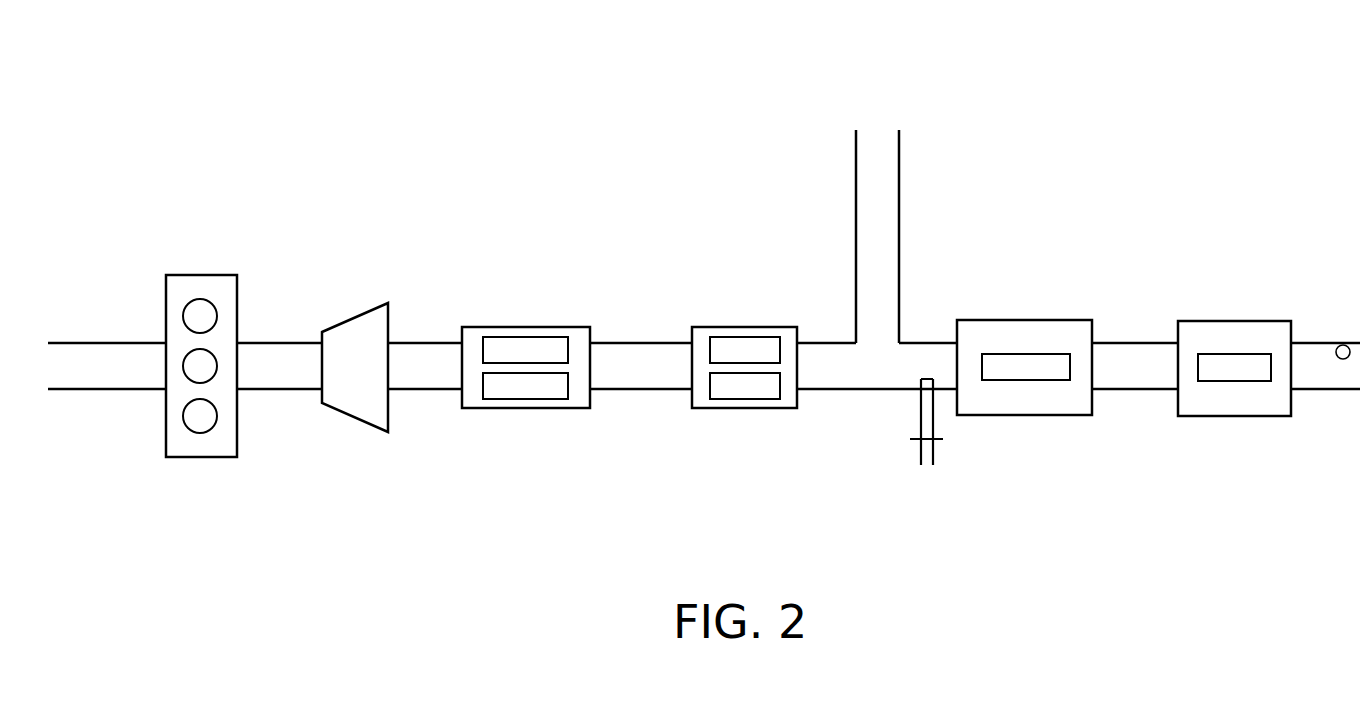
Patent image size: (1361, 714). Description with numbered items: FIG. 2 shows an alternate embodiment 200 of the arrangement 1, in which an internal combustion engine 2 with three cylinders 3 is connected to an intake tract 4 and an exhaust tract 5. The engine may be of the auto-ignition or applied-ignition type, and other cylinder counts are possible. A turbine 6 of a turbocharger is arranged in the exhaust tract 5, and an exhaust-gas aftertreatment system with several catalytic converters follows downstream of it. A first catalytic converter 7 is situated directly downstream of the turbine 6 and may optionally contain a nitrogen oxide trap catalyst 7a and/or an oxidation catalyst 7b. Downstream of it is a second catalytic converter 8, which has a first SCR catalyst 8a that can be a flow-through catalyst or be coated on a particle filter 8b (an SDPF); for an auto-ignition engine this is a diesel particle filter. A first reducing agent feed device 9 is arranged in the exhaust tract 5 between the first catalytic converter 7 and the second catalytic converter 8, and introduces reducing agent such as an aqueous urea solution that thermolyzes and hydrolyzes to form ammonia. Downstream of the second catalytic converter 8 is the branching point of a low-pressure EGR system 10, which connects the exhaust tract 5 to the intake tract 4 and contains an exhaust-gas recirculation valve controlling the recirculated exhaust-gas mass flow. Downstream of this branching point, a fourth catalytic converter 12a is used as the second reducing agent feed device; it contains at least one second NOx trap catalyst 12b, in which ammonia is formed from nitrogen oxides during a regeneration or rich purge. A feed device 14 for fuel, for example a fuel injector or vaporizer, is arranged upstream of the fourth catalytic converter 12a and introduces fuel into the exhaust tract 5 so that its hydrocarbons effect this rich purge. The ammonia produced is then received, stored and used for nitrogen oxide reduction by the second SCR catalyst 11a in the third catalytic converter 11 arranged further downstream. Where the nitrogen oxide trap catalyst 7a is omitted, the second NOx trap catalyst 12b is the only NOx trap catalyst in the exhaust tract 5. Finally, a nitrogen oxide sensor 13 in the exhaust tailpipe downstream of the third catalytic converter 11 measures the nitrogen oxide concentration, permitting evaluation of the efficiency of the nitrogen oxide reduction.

The arrangement 1 is at (202, 535).
The internal combustion engine 2 is at (160, 432).
The cylinders 3 is at (198, 300).
The intake tract 4 is at (88, 350).
The exhaust tract 5 is at (287, 350).
The turbine 6 is at (355, 350).
The first catalytic converter 7 is at (470, 348).
The nitrogen oxide trap catalyst 7a is at (533, 385).
The oxidation catalyst 7b is at (525, 348).
The second catalytic converter 8 is at (697, 348).
The first SCR catalyst 8a is at (752, 348).
The particle filter 8b is at (753, 385).
The first reducing agent feed device 9 is at (632, 342).
The low-pressure EGR system 10 is at (885, 155).
The third catalytic converter 11 is at (1190, 335).
The second SCR catalyst 11a is at (1237, 372).
The fourth catalytic converter 12a is at (968, 320).
The second NOx trap catalyst 12b is at (1047, 362).
The nitrogen oxide sensor 13 is at (1343, 345).
The feed device for fuel 14 is at (935, 450).
The alternate embodiment 200 is at (1093, 54).